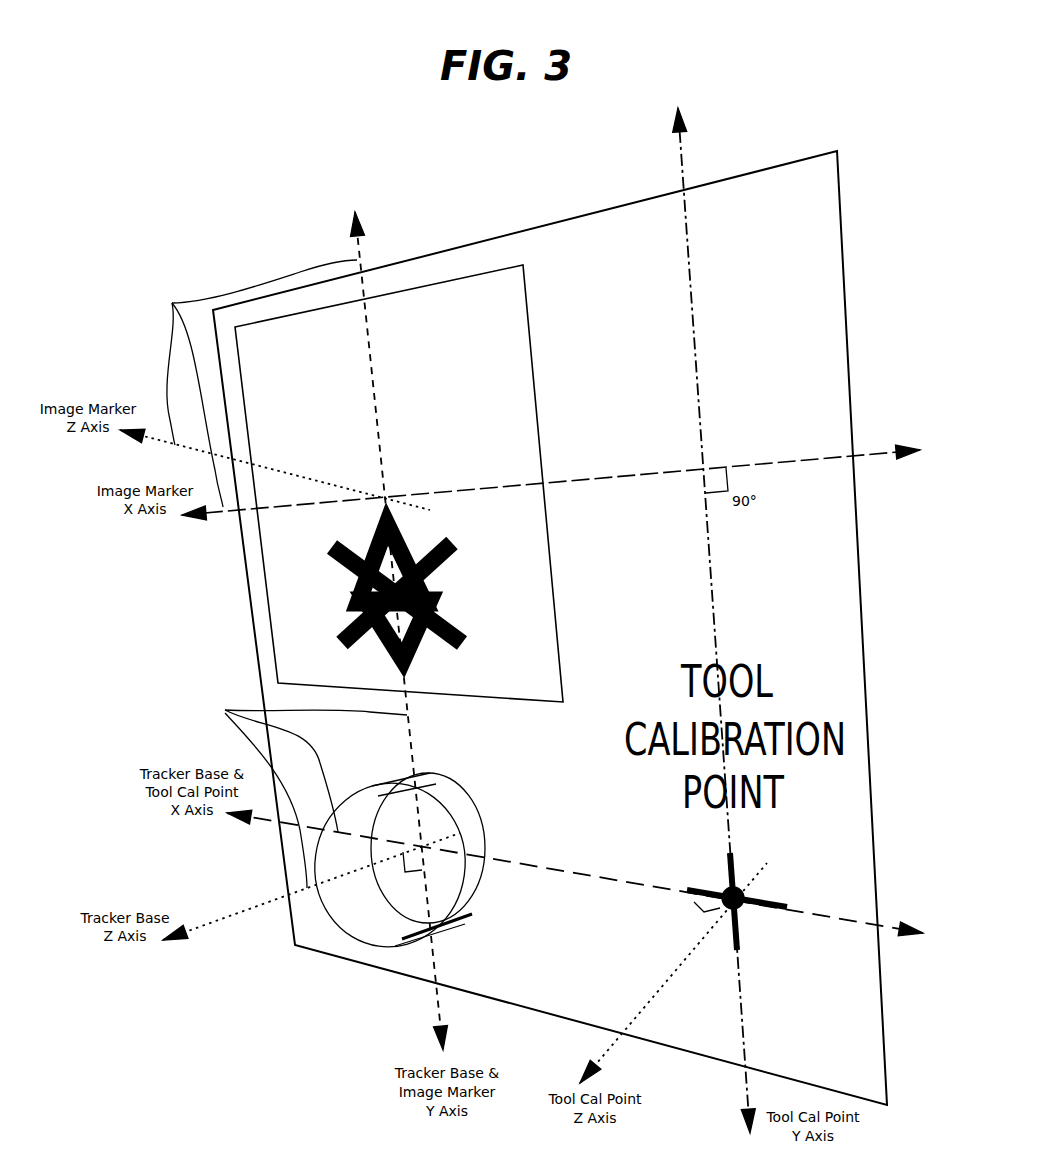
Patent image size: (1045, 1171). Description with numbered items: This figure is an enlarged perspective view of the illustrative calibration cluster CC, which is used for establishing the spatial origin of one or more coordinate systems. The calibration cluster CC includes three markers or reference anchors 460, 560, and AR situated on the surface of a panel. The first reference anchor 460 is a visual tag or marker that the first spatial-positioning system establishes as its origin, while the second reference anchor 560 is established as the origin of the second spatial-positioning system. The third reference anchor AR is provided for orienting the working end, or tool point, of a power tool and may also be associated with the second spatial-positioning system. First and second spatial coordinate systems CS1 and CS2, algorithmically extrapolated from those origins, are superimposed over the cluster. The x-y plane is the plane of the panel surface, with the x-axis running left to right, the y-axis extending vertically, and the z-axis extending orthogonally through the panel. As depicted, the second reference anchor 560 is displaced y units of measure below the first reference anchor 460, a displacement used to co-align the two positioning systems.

The first reference anchor 460 is at (300, 528).
The second reference anchor 560 is at (388, 920).
The calibration cluster CC is at (272, 248).
The first spatial coordinate system CS1 is at (238, 383).
The second spatial coordinate system CS2 is at (291, 787).
The third reference anchor AR is at (747, 897).